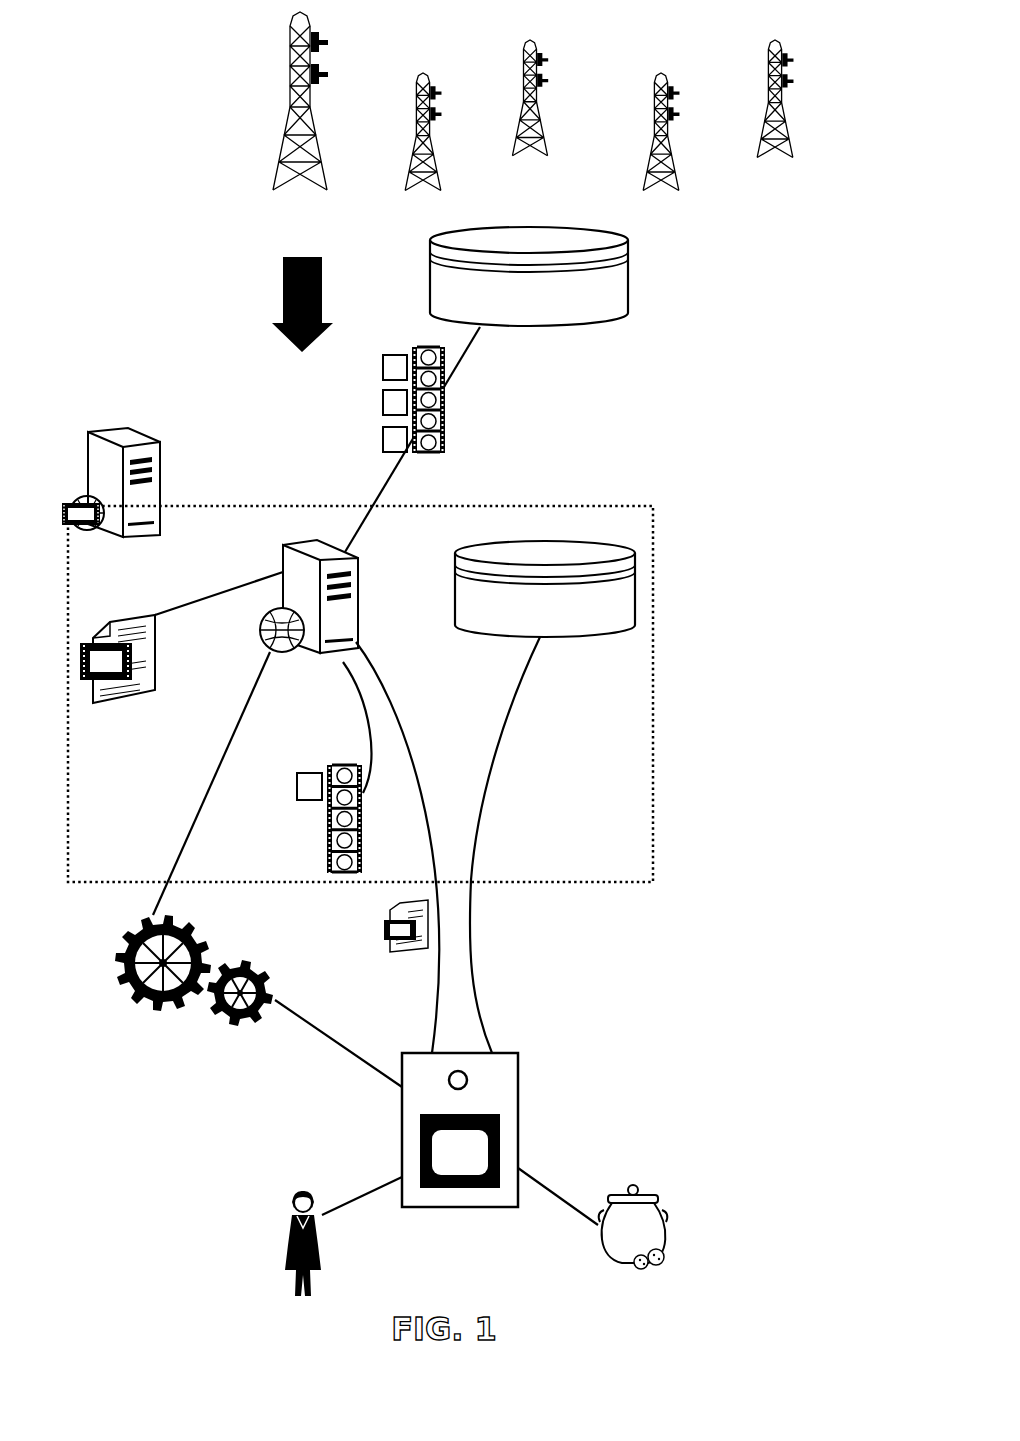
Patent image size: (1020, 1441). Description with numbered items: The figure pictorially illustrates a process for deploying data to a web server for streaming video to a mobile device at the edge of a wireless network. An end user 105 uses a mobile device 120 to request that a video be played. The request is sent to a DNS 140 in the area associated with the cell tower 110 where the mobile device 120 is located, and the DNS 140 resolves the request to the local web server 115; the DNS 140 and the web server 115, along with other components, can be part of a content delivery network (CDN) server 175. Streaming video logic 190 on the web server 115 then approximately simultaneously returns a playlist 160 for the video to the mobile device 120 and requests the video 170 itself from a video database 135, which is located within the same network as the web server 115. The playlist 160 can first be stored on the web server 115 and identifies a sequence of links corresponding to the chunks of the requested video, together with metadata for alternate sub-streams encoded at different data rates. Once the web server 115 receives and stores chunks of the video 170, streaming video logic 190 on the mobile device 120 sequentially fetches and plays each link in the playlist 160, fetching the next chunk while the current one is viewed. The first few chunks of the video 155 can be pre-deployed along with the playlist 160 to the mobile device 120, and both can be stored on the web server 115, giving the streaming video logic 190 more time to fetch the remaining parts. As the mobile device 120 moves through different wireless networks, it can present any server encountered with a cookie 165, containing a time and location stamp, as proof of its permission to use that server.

The cell tower 110 is at (525, 182).
The video database 135 is at (529, 276).
The video 170 is at (443, 400).
The content delivery network (CDN) server 175 is at (154, 462).
The web server 115 is at (298, 583).
The playlist 160 is at (254, 761).
The DNS 140 is at (545, 589).
The first few chunks of the video 155 is at (308, 786).
The streaming video logic 190 is at (186, 997).
The mobile device 120 is at (459, 1161).
The end user 105 is at (303, 1267).
The cookie 165 is at (633, 1248).